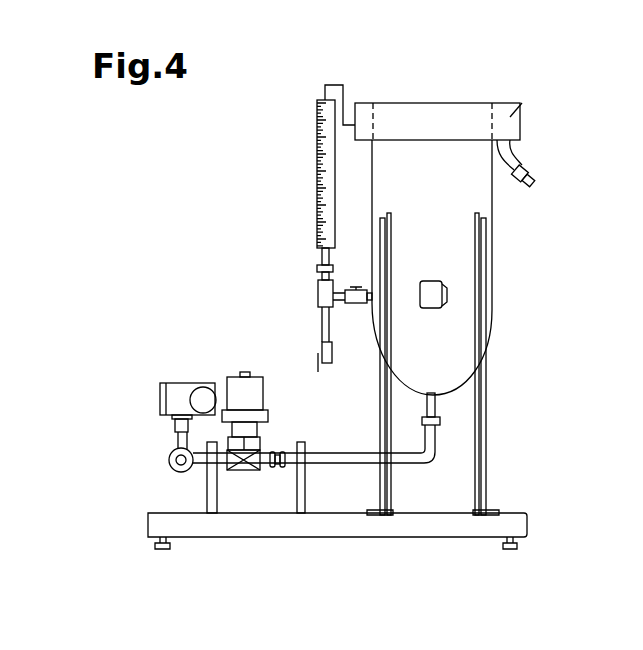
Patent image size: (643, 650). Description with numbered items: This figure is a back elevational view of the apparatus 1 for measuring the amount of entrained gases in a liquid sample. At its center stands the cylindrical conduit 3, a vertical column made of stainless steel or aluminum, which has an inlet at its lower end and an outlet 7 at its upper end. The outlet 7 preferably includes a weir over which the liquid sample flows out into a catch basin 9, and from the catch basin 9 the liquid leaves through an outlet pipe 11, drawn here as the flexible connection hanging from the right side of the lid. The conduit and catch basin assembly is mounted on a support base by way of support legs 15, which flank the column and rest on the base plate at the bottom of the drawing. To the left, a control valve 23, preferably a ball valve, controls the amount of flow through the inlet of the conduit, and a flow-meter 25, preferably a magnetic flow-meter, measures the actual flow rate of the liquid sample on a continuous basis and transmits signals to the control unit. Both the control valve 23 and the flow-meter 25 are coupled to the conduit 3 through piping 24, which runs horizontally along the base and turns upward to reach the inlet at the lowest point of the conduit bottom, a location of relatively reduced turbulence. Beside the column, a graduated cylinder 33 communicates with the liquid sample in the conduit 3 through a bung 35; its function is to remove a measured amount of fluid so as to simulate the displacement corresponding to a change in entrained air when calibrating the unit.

The apparatus 1 is at (183, 578).
The cylindrical conduit 3 is at (492, 215).
The outlet 7 is at (492, 103).
The catch basin 9 is at (522, 103).
The outlet pipe 11 is at (517, 155).
The support legs 15 is at (483, 415).
The control valve 23 is at (233, 390).
The piping 24 is at (333, 465).
The flow-meter 25 is at (173, 403).
The graduated cylinder 33 is at (317, 197).
The bung 35 is at (372, 300).